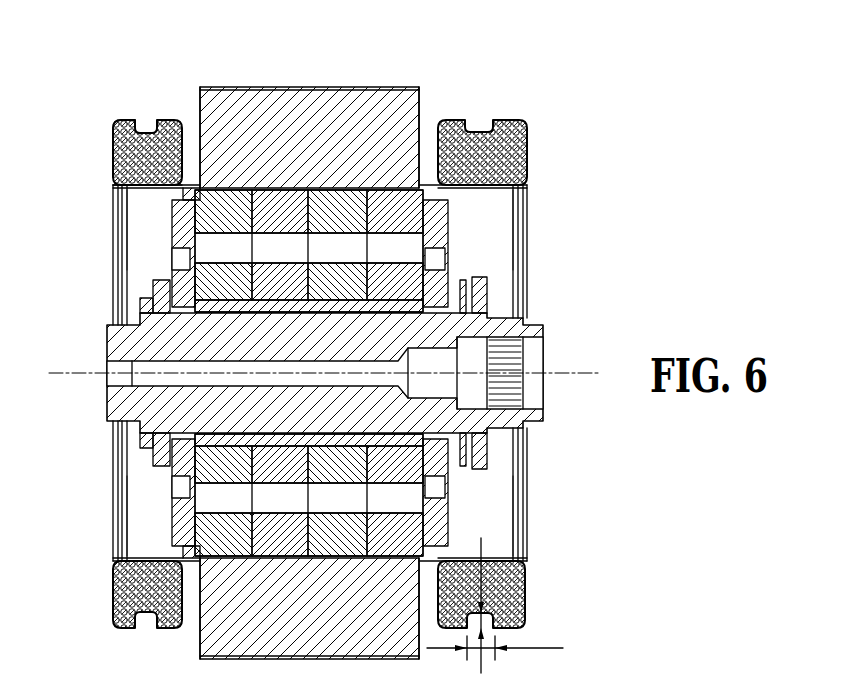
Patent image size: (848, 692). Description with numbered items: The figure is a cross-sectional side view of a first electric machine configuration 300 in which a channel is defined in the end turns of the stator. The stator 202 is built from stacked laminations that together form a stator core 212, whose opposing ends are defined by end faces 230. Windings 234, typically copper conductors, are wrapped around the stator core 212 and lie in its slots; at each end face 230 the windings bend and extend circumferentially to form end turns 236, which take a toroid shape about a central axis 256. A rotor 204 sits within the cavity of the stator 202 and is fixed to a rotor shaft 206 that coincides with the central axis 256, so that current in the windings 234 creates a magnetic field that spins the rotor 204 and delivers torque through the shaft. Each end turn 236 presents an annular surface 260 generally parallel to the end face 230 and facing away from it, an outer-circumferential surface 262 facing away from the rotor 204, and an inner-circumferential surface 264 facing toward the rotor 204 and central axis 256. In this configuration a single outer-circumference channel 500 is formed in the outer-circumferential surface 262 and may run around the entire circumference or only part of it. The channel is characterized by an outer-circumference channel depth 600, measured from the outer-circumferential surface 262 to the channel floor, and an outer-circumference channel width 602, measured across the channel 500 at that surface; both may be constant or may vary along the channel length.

The first electric machine configuration 300 is at (168, 52).
The stator 202 is at (252, 87).
The stator core 212 is at (333, 87).
The end face 230 is at (200, 113).
The windings 234 is at (192, 598).
The end turns 236 is at (527, 140).
The outer-circumference channel 500 is at (147, 128).
The outer-circumferential surface 262 is at (113, 118).
The annular surface 260 is at (113, 163).
The inner-circumferential surface 264 is at (138, 187).
The rotor 204 is at (393, 210).
The rotor shaft 206 is at (533, 325).
The central axis 256 is at (583, 372).
The outer-circumference channel depth 600 is at (481, 546).
The outer-circumference channel width 602 is at (543, 648).